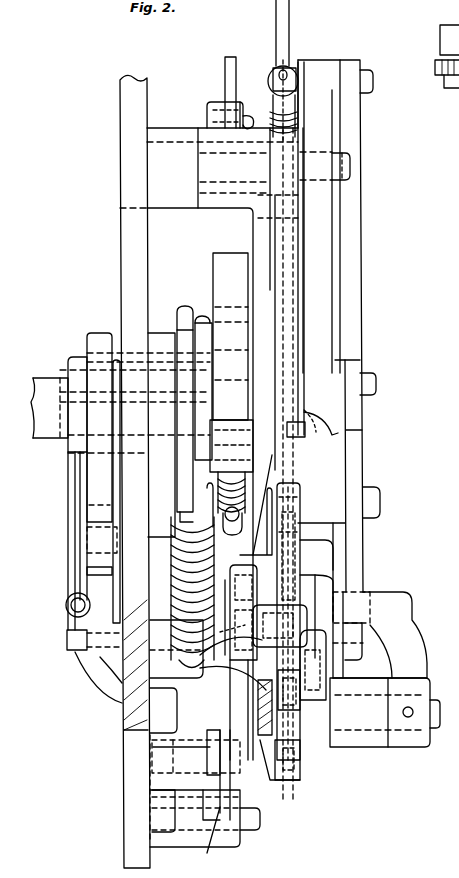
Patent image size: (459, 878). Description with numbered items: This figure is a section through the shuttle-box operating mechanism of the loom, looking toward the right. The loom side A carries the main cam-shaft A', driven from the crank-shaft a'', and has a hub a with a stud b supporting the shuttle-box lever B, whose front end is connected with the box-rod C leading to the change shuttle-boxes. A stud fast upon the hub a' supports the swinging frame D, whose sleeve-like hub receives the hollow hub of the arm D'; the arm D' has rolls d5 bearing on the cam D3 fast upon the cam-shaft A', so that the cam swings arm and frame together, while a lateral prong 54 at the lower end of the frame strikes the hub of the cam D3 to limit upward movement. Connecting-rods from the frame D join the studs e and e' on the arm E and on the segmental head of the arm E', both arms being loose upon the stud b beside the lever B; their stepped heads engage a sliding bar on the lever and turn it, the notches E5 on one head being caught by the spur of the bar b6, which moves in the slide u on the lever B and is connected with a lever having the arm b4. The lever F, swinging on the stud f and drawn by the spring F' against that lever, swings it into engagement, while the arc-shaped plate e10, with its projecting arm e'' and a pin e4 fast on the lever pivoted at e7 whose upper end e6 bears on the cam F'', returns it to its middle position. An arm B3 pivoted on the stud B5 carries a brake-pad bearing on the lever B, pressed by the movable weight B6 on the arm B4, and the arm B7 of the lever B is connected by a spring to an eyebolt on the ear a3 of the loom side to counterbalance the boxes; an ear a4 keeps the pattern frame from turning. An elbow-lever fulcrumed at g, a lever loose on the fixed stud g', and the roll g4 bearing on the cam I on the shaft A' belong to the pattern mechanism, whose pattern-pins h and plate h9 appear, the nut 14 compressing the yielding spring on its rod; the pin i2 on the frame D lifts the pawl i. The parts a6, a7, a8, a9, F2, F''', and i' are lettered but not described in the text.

The loom side A is at (133, 471).
The main cam-shaft A' is at (120, 403).
The hub a' is at (222, 444).
The hub a is at (260, 442).
The crank-shaft a'' is at (297, 110).
The ear a3 is at (90, 600).
The ear a4 is at (68, 575).
The lug a6 is at (373, 80).
The lug a7 is at (376, 384).
The frame column a8 is at (360, 265).
The lug a9 is at (362, 437).
The shuttle-box lever B is at (265, 710).
The arm B3 is at (233, 663).
The arm B4 is at (195, 789).
The stud B5 is at (189, 756).
The movable weight B6 is at (195, 818).
The arm of the lever B B7 is at (176, 649).
The stud b is at (440, 714).
The arm b4 is at (252, 612).
The bar b6 is at (227, 617).
The box-rod C is at (306, 667).
The swinging frame D is at (299, 431).
The arm D' is at (254, 326).
The cam D3 is at (230, 336).
The rolls d5 is at (210, 315).
The arm E is at (380, 685).
The arm E' is at (268, 680).
The notches E5 is at (300, 500).
The stud e is at (338, 547).
The stud e' is at (382, 502).
The projecting arm e'' is at (210, 840).
The pin e4 is at (380, 635).
The upper end of lever e6 is at (185, 305).
The pivot e7 is at (330, 420).
The arc-shaped plate e10 is at (300, 770).
The lever F is at (239, 505).
The spring F' is at (240, 637).
The cam F'' is at (171, 426).
The frame F''' is at (164, 435).
The spring F2 is at (192, 592).
The stud f is at (260, 820).
The fulcrum g is at (351, 617).
The fixed stud g' is at (79, 666).
The roll g4 is at (102, 551).
The pattern-pin h is at (447, 99).
The plate h9 is at (435, 68).
The cam I is at (103, 478).
The pawl i is at (236, 92).
The block i' is at (231, 108).
The pin i2 is at (258, 116).
The slide u is at (280, 626).
The nut 14 is at (264, 453).
The lateral prong 54 is at (308, 437).